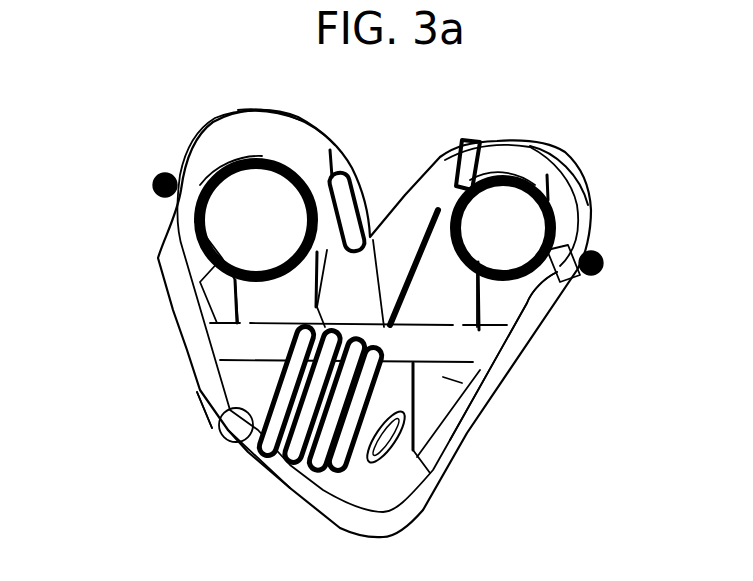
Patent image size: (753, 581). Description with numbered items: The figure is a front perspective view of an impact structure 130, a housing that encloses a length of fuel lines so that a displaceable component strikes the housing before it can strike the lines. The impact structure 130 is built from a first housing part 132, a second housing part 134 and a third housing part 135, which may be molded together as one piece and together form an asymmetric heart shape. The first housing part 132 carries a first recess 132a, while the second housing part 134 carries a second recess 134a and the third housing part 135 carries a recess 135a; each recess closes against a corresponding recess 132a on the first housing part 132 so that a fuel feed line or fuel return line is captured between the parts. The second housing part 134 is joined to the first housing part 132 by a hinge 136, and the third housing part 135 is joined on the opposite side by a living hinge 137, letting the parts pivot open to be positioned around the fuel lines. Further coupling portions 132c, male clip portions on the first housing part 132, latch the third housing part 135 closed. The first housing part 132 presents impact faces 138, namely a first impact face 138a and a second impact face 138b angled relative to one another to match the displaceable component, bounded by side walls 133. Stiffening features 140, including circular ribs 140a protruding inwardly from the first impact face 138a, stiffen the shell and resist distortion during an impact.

The impact structure 130 is at (603, 103).
The first housing part 132 is at (462, 436).
The first recess 132a is at (208, 258).
The further coupling portion 132c is at (455, 152).
The side walls 133 is at (443, 377).
The second housing part 134 is at (243, 113).
The second recess 134a is at (220, 183).
The third housing part 135 is at (593, 185).
The recess 135a is at (531, 185).
The hinge 136 is at (153, 173).
The living hinge 137 is at (604, 265).
The impact faces 138 is at (97, 413).
The first impact face 138a is at (247, 458).
The second impact face 138b is at (197, 393).
The stiffening features 140 is at (320, 398).
The circular ribs 140a is at (222, 410).